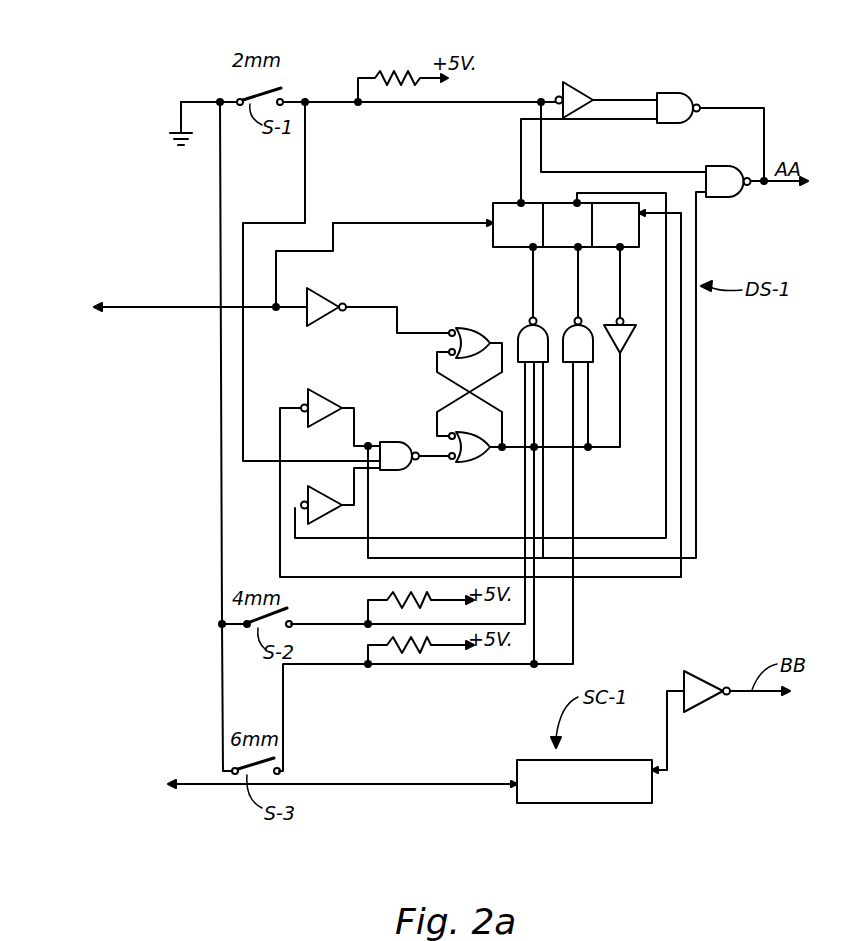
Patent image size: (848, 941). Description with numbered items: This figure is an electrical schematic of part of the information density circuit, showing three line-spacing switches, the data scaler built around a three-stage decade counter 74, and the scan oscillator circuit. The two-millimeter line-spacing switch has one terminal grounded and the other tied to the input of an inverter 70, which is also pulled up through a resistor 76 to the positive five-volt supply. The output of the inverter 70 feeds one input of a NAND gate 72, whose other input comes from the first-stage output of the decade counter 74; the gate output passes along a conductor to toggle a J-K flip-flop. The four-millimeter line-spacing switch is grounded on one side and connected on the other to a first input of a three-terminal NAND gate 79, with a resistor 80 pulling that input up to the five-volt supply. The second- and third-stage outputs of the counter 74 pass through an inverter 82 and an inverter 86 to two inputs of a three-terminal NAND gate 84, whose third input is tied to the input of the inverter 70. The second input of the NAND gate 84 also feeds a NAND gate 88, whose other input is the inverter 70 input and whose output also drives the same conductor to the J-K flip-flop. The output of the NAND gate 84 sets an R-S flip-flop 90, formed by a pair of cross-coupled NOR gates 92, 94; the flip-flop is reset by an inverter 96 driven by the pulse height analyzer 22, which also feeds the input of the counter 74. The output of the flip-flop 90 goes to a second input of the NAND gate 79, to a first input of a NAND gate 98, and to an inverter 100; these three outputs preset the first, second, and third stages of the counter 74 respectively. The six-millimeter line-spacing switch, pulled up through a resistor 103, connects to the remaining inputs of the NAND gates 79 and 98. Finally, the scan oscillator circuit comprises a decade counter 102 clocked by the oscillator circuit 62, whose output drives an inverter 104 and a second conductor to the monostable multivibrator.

The pulse height analyzer 22 is at (149, 287).
The oscillator circuit 62 is at (267, 774).
The inverter 70 is at (572, 82).
The NAND gate 72 is at (677, 92).
The three-stage decade counter 74 is at (503, 203).
The resistor 76 is at (408, 74).
The three-terminal NAND gate 79 is at (522, 325).
The resistor 80 is at (387, 600).
The inverter 82 is at (318, 517).
The three-terminal NAND gate 84 is at (392, 470).
The inverter 86 is at (320, 389).
The NAND gate 88 is at (722, 197).
The R-S flip-flop 90 is at (455, 470).
The NOR gate 92 is at (470, 328).
The NOR gate 94 is at (485, 432).
The inverter 96 is at (327, 296).
The NAND gate 98 is at (586, 326).
The inverter 100 is at (629, 340).
The decade counter 102 is at (560, 803).
The resistor 103 is at (424, 650).
The inverter 104 is at (708, 700).